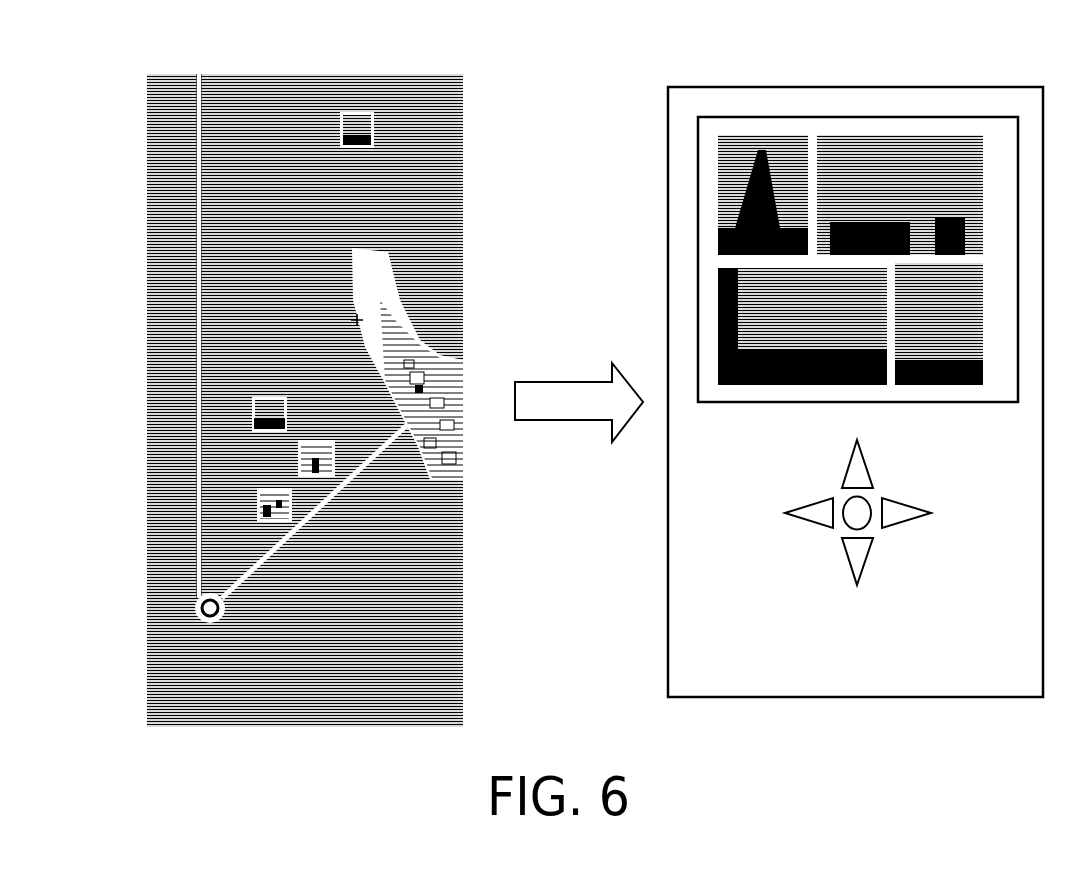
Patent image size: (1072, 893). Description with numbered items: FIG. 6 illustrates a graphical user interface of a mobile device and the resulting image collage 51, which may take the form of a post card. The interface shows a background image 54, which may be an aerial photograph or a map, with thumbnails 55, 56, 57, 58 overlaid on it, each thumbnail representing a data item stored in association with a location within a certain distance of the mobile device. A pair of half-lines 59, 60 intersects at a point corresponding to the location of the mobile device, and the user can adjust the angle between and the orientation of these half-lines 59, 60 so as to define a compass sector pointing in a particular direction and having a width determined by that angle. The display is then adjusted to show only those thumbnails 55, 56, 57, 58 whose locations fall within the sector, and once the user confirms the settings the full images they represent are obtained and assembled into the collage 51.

The collage 51 is at (1000, 136).
The background image 54 is at (427, 120).
The thumbnail 55 is at (358, 121).
The thumbnail 56 is at (262, 404).
The thumbnail 57 is at (323, 450).
The thumbnail 58 is at (275, 503).
The half-line 59 is at (195, 100).
The half-line 60 is at (453, 383).